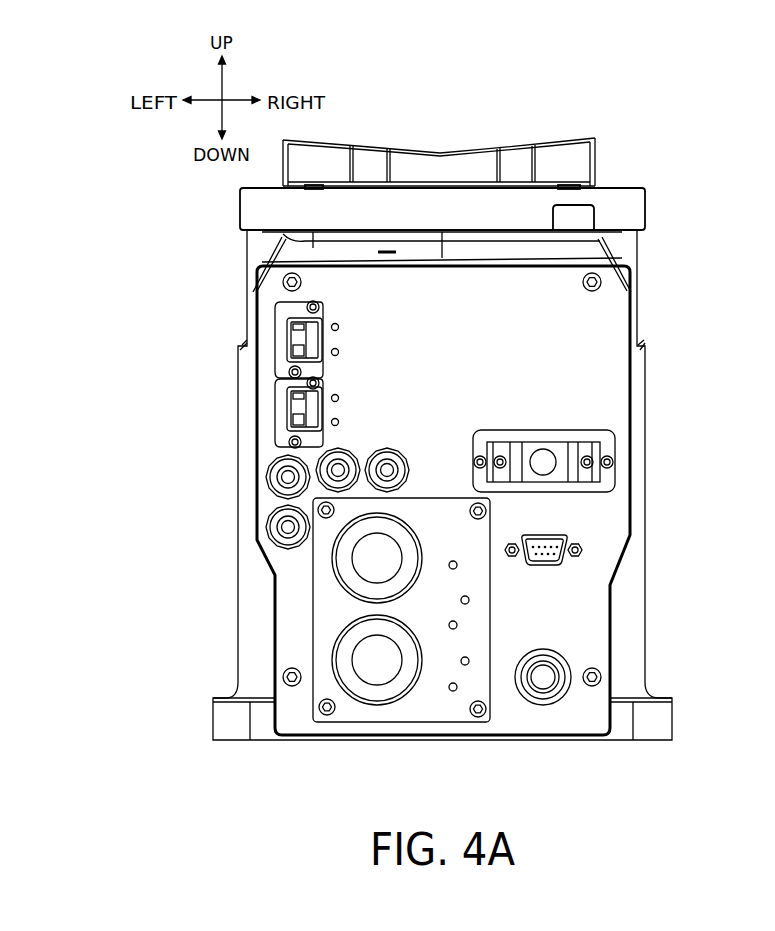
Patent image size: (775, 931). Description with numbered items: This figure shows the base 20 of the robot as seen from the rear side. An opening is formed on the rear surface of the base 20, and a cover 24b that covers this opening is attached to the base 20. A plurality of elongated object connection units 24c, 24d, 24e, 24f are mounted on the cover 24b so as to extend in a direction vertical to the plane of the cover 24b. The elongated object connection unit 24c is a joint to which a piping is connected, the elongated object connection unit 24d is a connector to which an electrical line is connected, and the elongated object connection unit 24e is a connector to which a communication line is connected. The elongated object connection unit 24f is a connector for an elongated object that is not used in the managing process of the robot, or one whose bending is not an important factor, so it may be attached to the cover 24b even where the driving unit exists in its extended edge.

The base 20 is at (238, 633).
The cover 24b is at (595, 330).
The elongated object connection unit 24c is at (272, 513).
The elongated object connection unit 24d is at (335, 677).
The elongated object connection unit 24e is at (290, 407).
The elongated object connection unit 24f is at (540, 655).